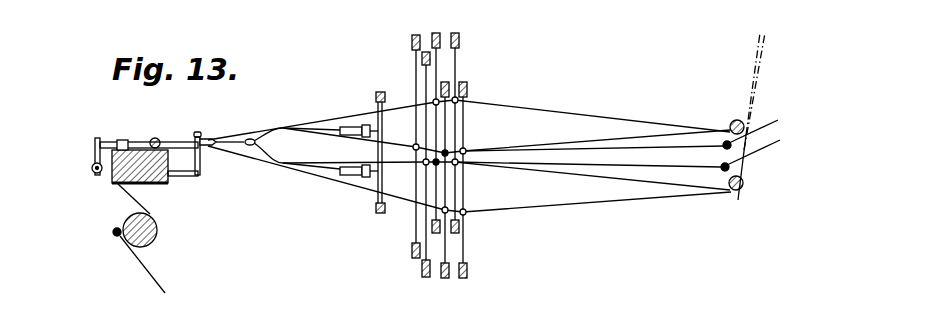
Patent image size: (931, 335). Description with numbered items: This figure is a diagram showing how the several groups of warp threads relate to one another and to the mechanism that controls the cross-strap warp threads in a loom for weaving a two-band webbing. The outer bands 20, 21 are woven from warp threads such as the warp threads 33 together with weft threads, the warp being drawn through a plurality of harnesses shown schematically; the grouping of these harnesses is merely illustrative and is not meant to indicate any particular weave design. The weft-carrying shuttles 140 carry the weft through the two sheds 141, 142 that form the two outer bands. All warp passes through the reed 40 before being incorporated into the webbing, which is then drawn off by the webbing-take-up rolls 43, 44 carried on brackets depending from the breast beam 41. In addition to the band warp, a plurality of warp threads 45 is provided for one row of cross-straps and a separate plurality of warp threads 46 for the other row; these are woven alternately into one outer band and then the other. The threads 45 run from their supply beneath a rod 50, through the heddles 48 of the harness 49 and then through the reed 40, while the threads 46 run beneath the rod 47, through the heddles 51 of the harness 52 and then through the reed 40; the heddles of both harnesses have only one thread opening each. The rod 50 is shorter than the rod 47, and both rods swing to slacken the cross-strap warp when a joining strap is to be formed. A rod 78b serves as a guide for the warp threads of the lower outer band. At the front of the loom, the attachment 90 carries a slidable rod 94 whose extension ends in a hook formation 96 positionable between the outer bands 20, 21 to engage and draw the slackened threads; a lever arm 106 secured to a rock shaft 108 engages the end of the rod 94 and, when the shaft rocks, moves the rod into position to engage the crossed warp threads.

The outer band 20 is at (236, 132).
The outer band 21 is at (238, 153).
The warp threads 33 is at (595, 180).
The reed 40 is at (378, 208).
The breast beam 41 is at (170, 185).
The webbing-take-up roll 43 is at (158, 230).
The webbing-take-up roll 44 is at (113, 234).
The warp threads 45 is at (645, 150).
The warp threads 46 is at (690, 172).
The rod 47 is at (724, 172).
The heddles 48 is at (422, 61).
The harness 49 is at (412, 42).
The rod 50 is at (724, 148).
The heddles 51 is at (412, 250).
The harness 52 is at (595, 142).
The rod 78b is at (738, 192).
The attachment 90 is at (127, 136).
The rod 94 is at (108, 141).
The hook formation 96 is at (258, 142).
The lever arm 106 is at (95, 152).
The rock shaft 108 is at (96, 173).
The weft-carrying shuttles 140 is at (348, 126).
The shed 141 is at (306, 125).
The shed 142 is at (317, 177).